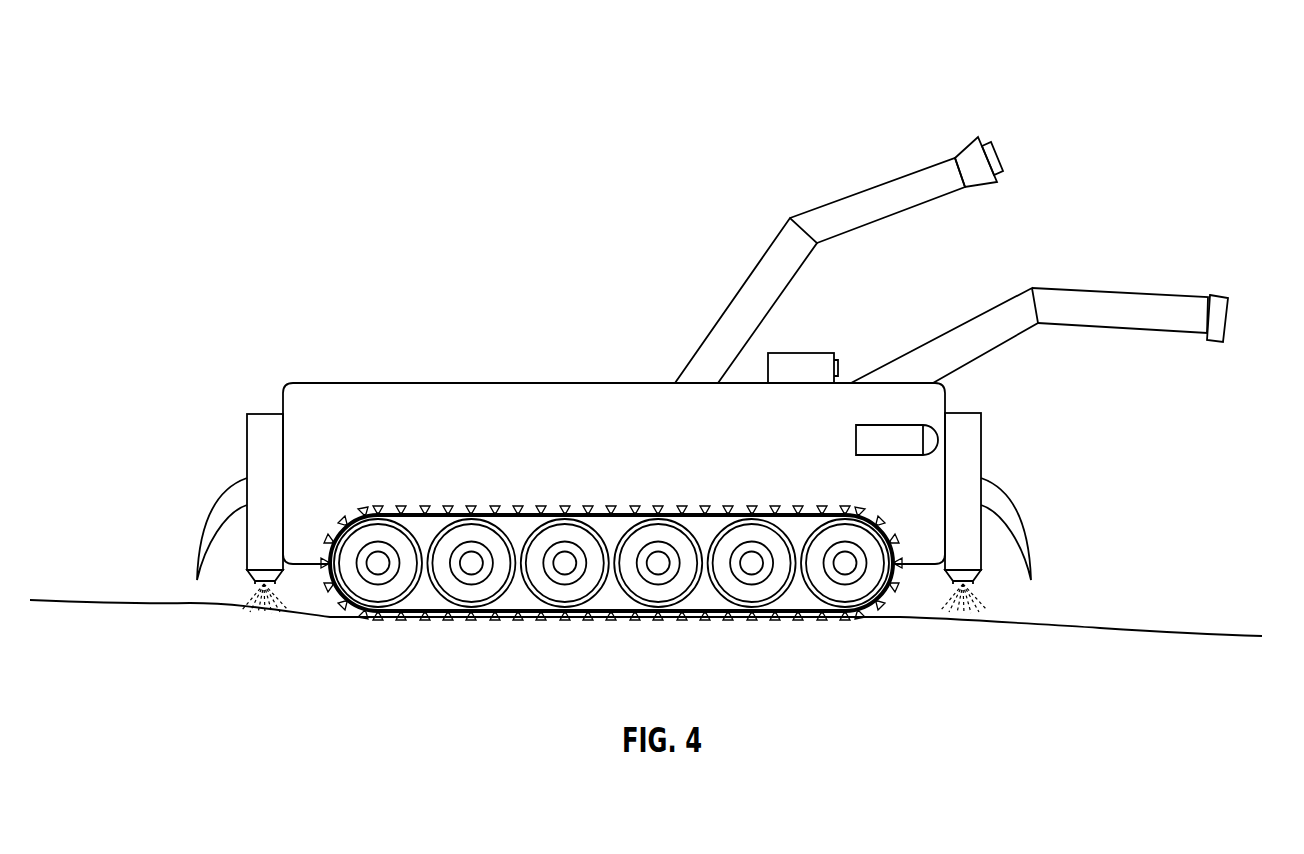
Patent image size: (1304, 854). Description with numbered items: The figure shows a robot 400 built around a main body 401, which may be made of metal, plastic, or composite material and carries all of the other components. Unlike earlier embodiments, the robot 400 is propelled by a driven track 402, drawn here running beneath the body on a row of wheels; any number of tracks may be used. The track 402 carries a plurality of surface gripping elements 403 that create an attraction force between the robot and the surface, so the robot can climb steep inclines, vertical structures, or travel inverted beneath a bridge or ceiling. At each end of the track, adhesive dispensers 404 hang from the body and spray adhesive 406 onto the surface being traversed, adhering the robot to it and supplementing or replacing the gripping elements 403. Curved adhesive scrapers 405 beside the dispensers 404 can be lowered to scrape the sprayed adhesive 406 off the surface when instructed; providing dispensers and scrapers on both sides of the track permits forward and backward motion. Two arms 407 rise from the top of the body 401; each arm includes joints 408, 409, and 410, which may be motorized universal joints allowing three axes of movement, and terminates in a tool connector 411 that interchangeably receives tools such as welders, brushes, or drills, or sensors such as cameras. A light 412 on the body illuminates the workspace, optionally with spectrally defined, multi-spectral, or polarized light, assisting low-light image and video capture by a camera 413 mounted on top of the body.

The robot 400 is at (208, 142).
The main body 401 is at (312, 393).
The driven track 402 is at (430, 617).
The surface gripping elements 403 is at (577, 617).
The adhesive dispensers 404 is at (260, 425).
The adhesive scrapers 405 is at (202, 537).
The adhesive 406 is at (263, 611).
The arms 407 is at (755, 285).
The joint 408 is at (676, 383).
The joint 409 is at (790, 218).
The joint 410 is at (955, 158).
The tool connector 411 is at (985, 178).
The light 412 is at (856, 445).
The camera 413 is at (800, 353).